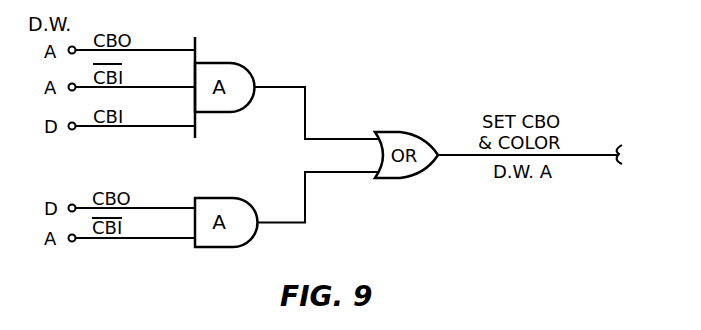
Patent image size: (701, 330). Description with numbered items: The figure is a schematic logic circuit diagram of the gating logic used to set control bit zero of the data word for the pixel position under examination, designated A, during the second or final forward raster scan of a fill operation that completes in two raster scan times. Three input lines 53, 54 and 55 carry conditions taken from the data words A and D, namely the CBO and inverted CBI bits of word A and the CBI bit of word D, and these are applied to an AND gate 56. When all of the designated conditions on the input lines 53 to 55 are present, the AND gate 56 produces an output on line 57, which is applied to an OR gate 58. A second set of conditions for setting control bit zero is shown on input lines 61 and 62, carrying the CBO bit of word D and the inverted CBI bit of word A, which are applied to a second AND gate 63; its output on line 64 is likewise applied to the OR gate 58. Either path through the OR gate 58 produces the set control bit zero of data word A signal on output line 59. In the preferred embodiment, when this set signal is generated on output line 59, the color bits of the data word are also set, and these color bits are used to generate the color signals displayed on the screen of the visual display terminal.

The input line 53 is at (147, 49).
The input line 54 is at (162, 86).
The input line 55 is at (172, 128).
The AND gate 56 is at (245, 65).
The output line 57 is at (290, 84).
The OR gate 58 is at (412, 131).
The output line 59 is at (460, 153).
The input line 61 is at (165, 207).
The input line 62 is at (173, 240).
The AND gate 63 is at (238, 197).
The output line 64 is at (283, 224).